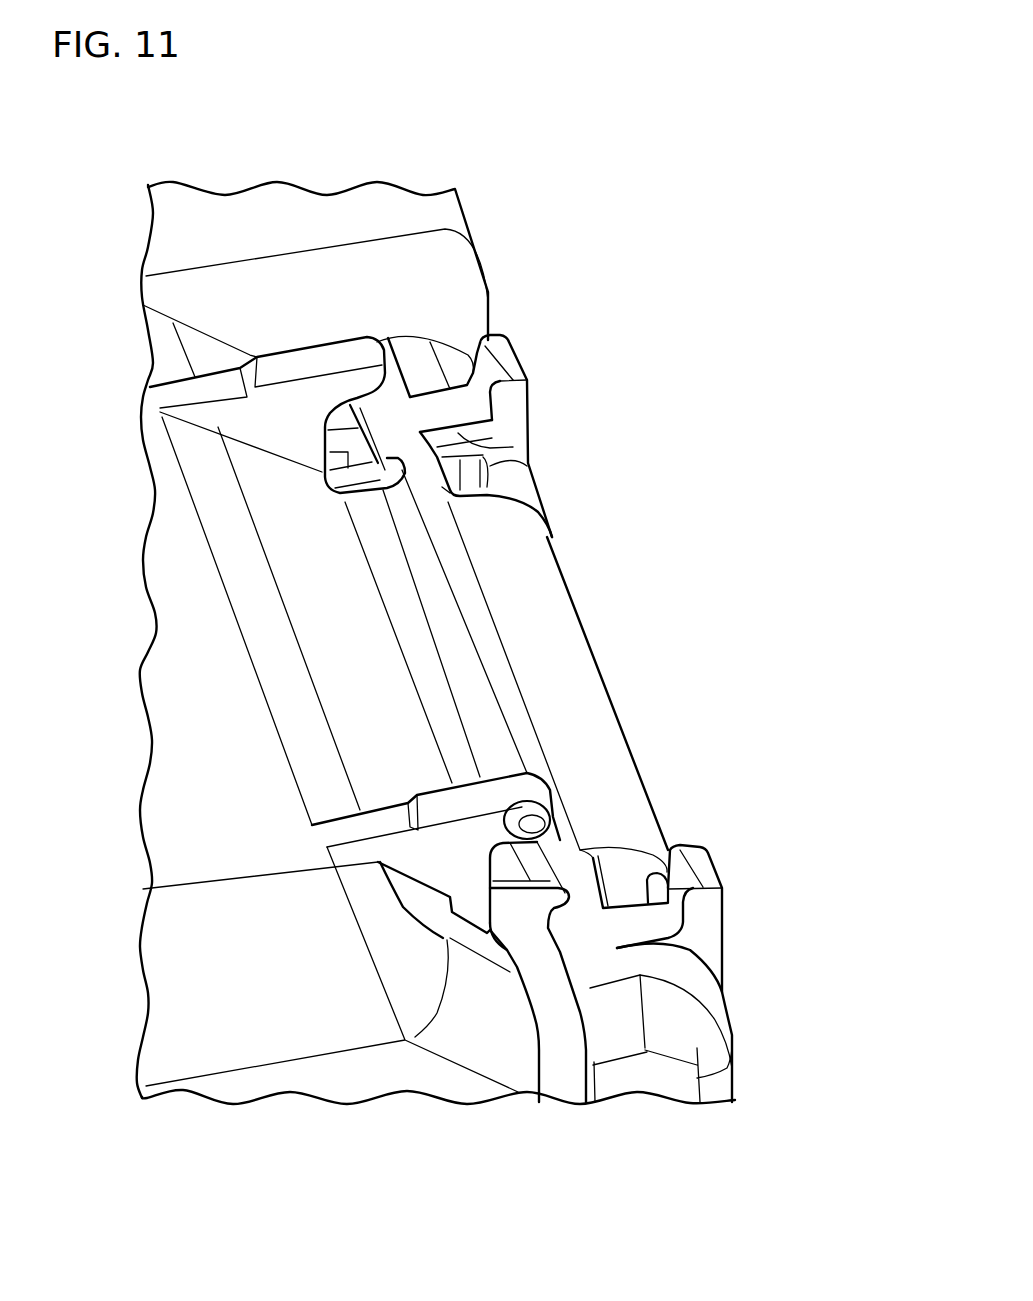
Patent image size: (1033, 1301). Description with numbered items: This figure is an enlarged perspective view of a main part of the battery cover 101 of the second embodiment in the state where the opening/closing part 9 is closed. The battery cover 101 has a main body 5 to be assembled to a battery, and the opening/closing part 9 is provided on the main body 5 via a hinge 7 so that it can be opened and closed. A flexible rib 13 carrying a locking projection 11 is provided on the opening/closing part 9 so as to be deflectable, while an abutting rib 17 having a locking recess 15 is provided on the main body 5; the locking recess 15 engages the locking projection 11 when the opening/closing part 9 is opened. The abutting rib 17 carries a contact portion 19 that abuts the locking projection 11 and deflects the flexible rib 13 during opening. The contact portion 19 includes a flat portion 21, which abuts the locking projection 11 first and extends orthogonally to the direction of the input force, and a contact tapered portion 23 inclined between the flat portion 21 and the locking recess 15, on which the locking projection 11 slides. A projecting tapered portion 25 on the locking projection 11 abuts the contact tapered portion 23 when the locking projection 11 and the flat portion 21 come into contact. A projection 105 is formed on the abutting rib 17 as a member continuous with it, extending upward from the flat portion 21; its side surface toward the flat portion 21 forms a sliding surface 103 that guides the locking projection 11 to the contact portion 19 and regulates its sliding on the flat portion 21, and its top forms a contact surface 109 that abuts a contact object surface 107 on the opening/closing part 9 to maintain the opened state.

The main body 5 is at (563, 640).
The hinge 7 is at (385, 573).
The opening/closing part 9 is at (197, 703).
The locking projection 11 is at (556, 824).
The flexible rib 13 is at (312, 345).
The locking recess 15 is at (503, 488).
The abutting rib 17 is at (530, 412).
The contact portion 19 is at (432, 392).
The flat portion 21 is at (480, 413).
The contact tapered portion 23 is at (487, 449).
The projecting tapered portion 25 is at (538, 803).
The battery cover 101 is at (592, 210).
The sliding surface 103 is at (666, 900).
The projection 105 is at (518, 360).
The contact object surface 107 is at (423, 898).
The contact surface 109 is at (687, 856).